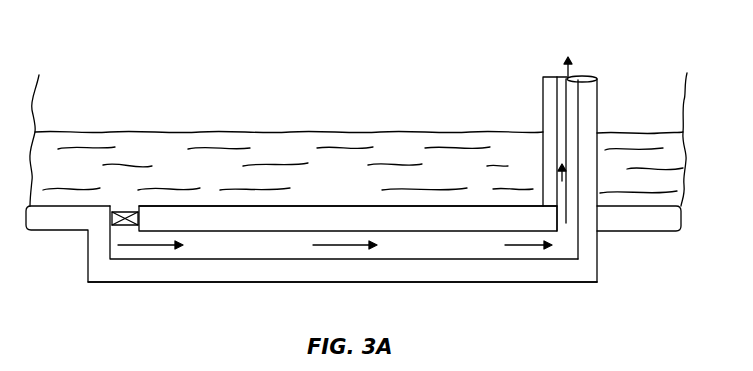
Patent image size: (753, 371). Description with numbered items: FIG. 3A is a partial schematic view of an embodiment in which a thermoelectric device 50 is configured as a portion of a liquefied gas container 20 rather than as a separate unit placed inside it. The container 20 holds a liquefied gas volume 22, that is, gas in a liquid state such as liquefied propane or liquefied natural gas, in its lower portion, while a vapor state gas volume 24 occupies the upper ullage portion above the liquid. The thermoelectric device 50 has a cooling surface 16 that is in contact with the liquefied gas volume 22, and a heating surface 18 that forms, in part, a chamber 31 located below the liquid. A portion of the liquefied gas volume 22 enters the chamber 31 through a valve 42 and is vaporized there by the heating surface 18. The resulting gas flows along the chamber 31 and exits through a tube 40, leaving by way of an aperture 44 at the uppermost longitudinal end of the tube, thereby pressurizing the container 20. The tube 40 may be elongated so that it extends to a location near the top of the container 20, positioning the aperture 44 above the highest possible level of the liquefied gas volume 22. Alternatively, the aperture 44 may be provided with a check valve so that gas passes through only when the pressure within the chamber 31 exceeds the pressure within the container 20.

The cooling surface 16 is at (470, 206).
The heating surface 18 is at (473, 231).
The liquefied gas container 20 is at (53, 218).
The liquefied gas volume 22 is at (348, 194).
The vapor state gas volume 24 is at (353, 84).
The chamber 31 is at (257, 247).
The tube 40 is at (589, 71).
The valve 42 is at (124, 211).
The aperture 44 is at (569, 82).
The thermoelectric device 50 is at (245, 218).